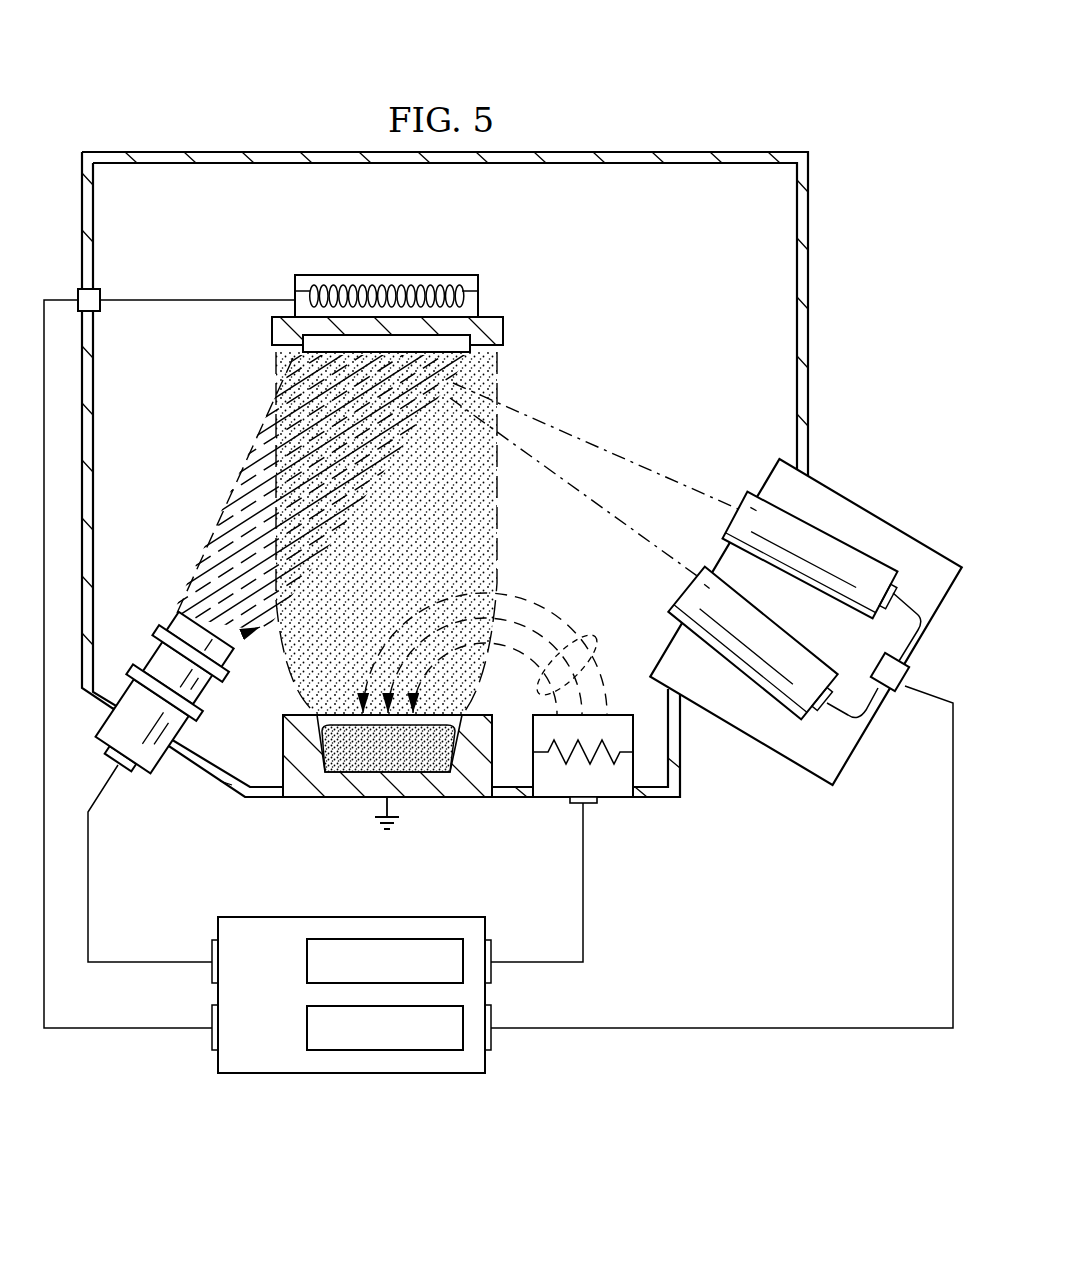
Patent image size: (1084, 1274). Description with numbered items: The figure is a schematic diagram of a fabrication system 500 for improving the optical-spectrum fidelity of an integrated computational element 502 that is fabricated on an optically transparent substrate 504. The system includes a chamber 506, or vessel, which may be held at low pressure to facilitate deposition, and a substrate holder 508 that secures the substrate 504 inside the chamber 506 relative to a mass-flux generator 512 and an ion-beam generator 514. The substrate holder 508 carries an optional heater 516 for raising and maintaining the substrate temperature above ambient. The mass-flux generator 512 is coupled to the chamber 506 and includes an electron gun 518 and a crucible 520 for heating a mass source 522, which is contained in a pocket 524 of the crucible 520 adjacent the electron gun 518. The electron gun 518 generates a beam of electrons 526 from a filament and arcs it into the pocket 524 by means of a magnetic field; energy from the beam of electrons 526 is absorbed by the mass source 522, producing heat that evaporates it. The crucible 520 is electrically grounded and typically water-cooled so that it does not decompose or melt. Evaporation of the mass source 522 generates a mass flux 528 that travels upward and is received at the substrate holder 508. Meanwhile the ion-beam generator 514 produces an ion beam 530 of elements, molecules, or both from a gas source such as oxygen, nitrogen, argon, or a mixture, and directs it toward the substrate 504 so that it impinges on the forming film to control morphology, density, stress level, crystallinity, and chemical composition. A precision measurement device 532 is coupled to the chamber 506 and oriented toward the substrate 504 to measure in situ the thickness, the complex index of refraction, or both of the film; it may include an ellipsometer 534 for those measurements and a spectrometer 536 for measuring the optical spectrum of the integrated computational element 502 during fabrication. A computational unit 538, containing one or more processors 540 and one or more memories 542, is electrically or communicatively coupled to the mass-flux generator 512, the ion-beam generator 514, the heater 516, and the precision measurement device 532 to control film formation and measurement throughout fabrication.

The fabrication system 500 is at (600, 70).
The integrated computational element 502 is at (448, 357).
The substrate 504 is at (327, 343).
The chamber 506 is at (272, 152).
The substrate holder 508 is at (490, 325).
The mass-flux generator 512 is at (506, 824).
The ion-beam generator 514 is at (143, 648).
The heater 516 is at (388, 275).
The electron gun 518 is at (618, 797).
The crucible 520 is at (404, 765).
The mass source 522 is at (345, 762).
The pocket 524 is at (428, 757).
The beam of electrons 526 is at (630, 628).
The mass flux 528 is at (490, 510).
The ion beam 530 is at (228, 502).
The precision measurement device 532 is at (726, 732).
The ellipsometer 534 is at (853, 652).
The spectrometer 536 is at (823, 532).
The computational unit 538 is at (351, 1028).
The processor 540 is at (307, 961).
The memory 542 is at (307, 1028).